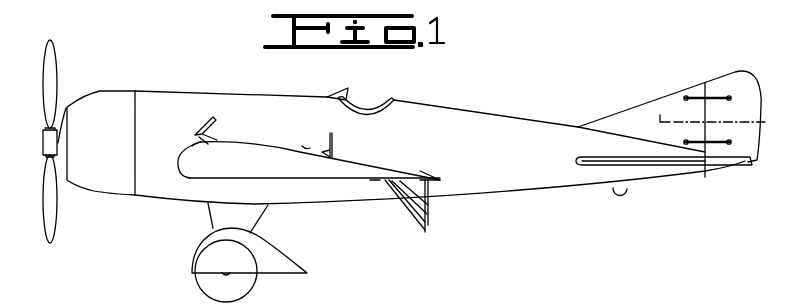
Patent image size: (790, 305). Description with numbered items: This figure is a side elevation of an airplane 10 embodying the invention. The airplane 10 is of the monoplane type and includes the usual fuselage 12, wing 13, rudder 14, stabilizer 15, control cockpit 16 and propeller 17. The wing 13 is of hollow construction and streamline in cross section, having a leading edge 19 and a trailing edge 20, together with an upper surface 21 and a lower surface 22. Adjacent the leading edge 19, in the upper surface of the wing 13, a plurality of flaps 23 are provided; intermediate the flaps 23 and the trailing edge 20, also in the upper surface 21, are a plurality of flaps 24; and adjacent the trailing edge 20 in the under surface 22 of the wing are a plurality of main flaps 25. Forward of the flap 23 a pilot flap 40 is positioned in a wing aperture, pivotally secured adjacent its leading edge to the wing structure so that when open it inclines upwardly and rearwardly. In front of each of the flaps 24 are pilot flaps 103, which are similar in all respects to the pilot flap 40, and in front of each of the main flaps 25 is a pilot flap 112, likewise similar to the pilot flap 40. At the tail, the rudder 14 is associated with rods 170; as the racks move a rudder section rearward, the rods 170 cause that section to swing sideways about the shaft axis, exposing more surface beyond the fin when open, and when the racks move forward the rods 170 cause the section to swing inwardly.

The airplane 10 is at (185, 85).
The fuselage 12 is at (472, 118).
The wing 13 is at (316, 173).
The rudder 14 is at (725, 80).
The stabilizer 15 is at (660, 112).
The control cockpit 16 is at (371, 108).
The propeller 17 is at (45, 222).
The leading edge 19 is at (177, 165).
The trailing edge 20 is at (442, 180).
The upper surface 21 is at (250, 143).
The lower surface 22 is at (267, 185).
The flaps 23 is at (210, 118).
The flaps 24 is at (335, 150).
The flaps 25 is at (428, 225).
The pilot flap 40 is at (189, 146).
The pilot flaps 103 is at (304, 147).
The pilot flap 112 is at (374, 184).
The rods 170 is at (713, 106).